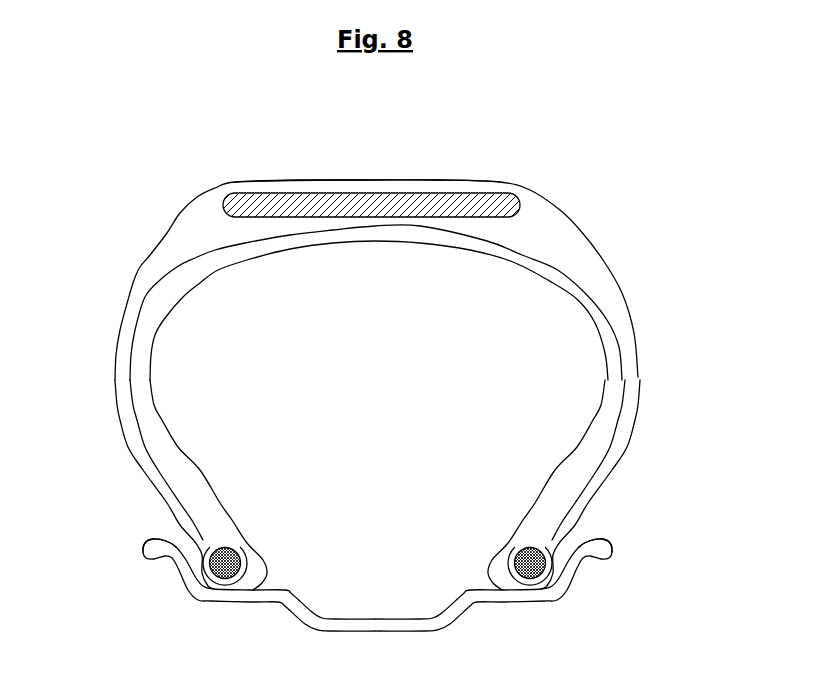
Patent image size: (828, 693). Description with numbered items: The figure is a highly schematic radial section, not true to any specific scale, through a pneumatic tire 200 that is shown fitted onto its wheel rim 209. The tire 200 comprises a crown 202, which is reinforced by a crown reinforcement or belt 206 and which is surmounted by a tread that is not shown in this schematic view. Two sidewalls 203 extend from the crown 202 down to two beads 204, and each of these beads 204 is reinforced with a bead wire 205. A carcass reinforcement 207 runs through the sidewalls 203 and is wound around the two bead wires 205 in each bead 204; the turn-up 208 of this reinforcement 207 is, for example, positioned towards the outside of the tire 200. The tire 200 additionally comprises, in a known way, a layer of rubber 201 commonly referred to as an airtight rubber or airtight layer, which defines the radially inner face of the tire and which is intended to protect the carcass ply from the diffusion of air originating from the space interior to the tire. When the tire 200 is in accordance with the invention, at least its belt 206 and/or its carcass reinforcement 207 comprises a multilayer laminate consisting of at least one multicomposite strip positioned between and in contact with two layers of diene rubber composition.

The pneumatic tire 200 is at (652, 322).
The layer of rubber 201 is at (550, 275).
The crown 202 is at (453, 187).
The sidewall 203 is at (124, 380).
The bead 204 is at (248, 582).
The bead wire 205 is at (243, 563).
The crown reinforcement or belt 206 is at (367, 195).
The carcass reinforcement 207 is at (152, 305).
The turn-up 208 is at (197, 542).
The wheel rim 209 is at (190, 573).